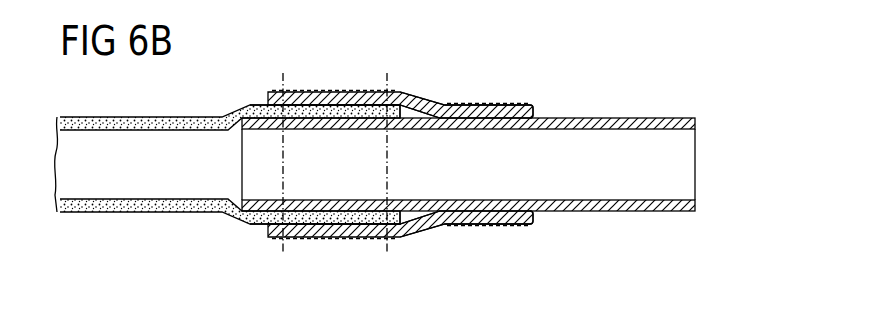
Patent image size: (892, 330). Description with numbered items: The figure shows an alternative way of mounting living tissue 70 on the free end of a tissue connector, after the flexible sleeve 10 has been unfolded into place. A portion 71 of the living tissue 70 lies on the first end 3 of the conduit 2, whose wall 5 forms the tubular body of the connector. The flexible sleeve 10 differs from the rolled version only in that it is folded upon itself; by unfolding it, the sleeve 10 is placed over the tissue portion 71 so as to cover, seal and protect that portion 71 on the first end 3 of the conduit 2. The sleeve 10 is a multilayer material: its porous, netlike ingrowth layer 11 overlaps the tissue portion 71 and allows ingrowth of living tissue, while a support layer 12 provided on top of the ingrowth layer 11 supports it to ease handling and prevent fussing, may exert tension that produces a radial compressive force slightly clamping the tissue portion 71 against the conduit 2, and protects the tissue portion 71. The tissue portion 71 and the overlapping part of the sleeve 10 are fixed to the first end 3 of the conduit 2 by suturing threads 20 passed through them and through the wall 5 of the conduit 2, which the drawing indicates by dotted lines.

The conduit 2 is at (607, 183).
The first end 3 is at (242, 165).
The wall 5 is at (656, 118).
The flexible sleeve 10 is at (337, 250).
The ingrowth layer 11 is at (540, 108).
The support layer 12 is at (505, 104).
The suturing threads 20 is at (283, 250).
The living tissue 70 is at (118, 117).
The tissue portion 71 is at (336, 106).